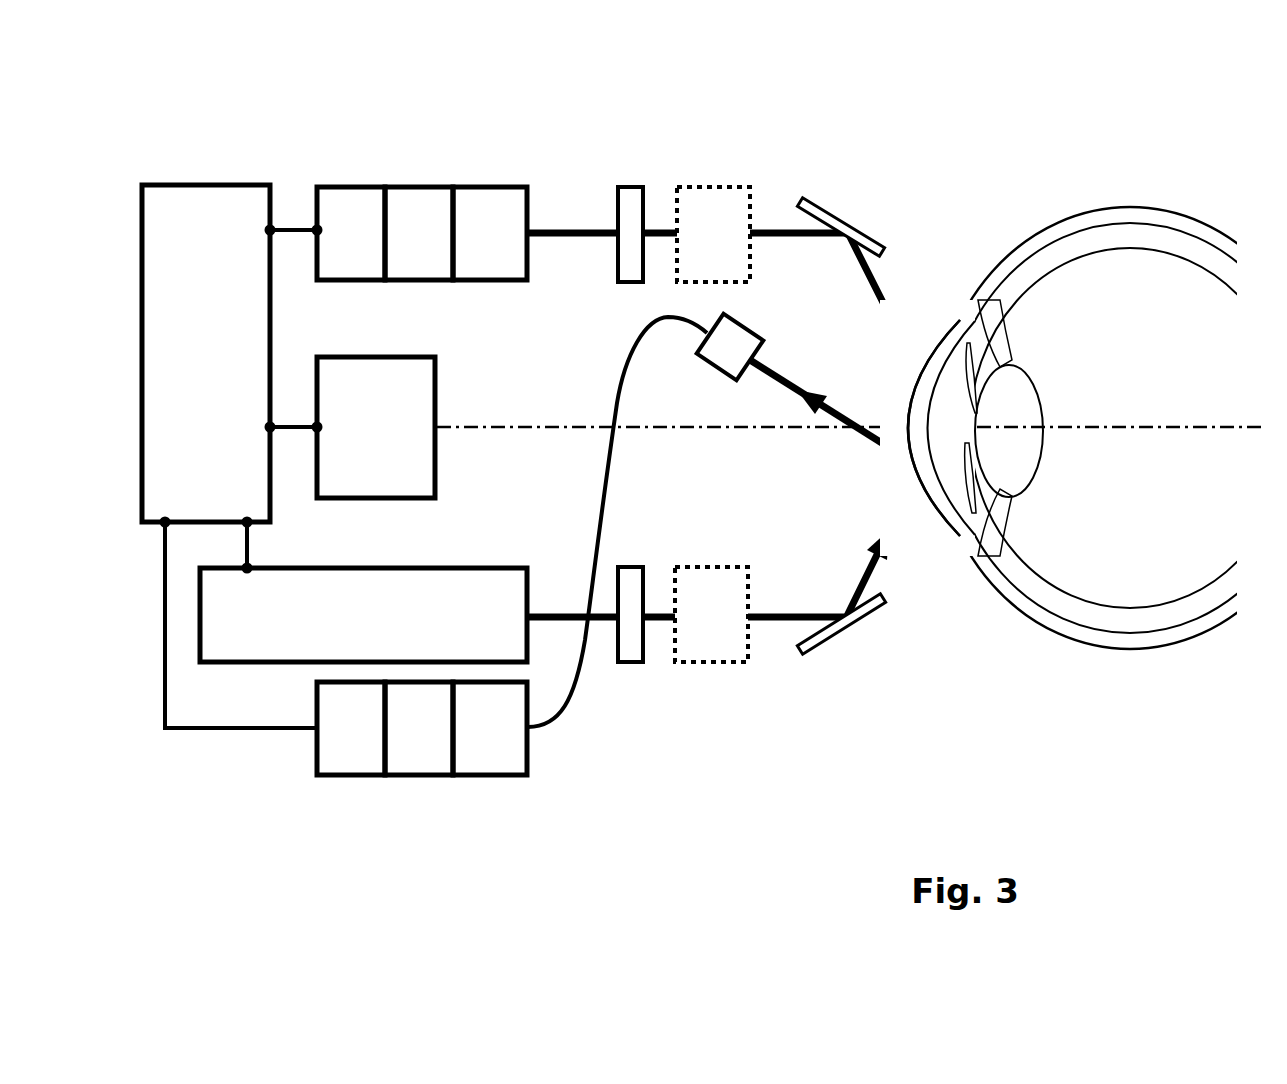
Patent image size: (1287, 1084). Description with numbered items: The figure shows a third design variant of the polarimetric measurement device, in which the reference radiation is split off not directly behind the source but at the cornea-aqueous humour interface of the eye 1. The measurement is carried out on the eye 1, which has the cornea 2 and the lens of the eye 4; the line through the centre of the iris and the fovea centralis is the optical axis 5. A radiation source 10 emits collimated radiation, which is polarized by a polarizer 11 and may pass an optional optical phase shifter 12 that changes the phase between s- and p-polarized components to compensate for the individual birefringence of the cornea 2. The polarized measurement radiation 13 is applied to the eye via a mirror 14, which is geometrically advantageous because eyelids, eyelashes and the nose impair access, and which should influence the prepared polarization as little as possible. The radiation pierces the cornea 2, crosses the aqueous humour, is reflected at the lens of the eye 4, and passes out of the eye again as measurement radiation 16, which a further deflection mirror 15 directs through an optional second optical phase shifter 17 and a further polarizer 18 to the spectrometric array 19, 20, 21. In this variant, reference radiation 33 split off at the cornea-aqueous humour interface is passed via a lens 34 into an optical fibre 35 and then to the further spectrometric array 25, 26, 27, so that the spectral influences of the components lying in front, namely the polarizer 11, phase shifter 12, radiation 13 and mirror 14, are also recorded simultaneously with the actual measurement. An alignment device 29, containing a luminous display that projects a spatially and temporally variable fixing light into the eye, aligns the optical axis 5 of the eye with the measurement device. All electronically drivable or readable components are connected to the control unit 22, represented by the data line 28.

The eye 1 is at (1087, 652).
The cornea 2 is at (950, 514).
The lens of the eye 4 is at (1026, 404).
The optical axis 5 is at (1250, 428).
The radiation source 10 is at (479, 568).
The polarizer 11 is at (632, 663).
The optical phase shifter 12 is at (712, 663).
The polarized measurement radiation 13 is at (772, 621).
The mirror 14 is at (850, 643).
The deflection mirror 15 is at (842, 212).
The measurement radiation 16 is at (773, 229).
The optical phase shifter 17 is at (713, 187).
The polarizer 18 is at (632, 187).
The spectrometric array component 19 is at (482, 187).
The spectrometric array component 20 is at (418, 187).
The spectrometric array component 21 is at (365, 187).
The control unit 22 is at (213, 185).
The spectrometric array component 25 is at (482, 776).
The spectrometric array component 26 is at (418, 776).
The spectrometric array component 27 is at (363, 776).
The data line 28 is at (190, 730).
The alignment device 29 is at (435, 382).
The reference radiation 33 is at (867, 432).
The lens 34 is at (715, 368).
The optical fibre 35 is at (598, 508).